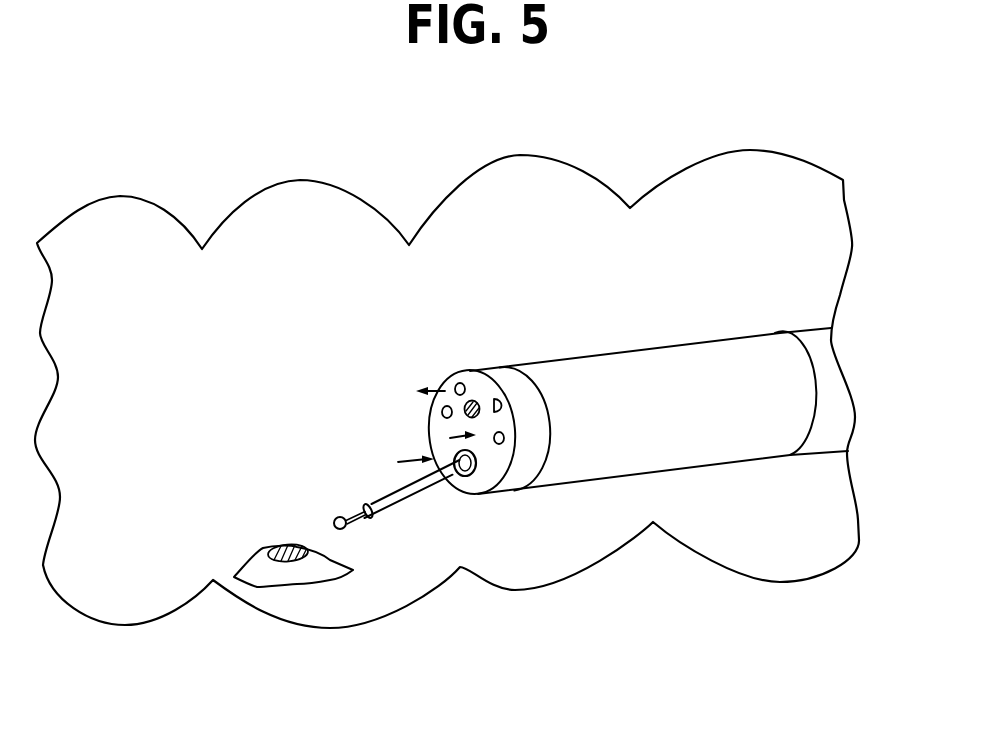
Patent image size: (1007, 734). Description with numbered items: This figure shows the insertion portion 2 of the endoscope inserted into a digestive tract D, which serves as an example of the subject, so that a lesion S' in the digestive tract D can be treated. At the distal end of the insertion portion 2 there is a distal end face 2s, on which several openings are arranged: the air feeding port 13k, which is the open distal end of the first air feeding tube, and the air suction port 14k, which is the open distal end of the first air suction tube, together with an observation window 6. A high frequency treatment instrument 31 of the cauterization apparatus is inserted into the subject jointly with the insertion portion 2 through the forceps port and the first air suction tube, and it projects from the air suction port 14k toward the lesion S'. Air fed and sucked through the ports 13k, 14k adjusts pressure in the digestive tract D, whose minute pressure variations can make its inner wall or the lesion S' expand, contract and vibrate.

The digestive tract D is at (558, 162).
The insertion portion 2 is at (623, 378).
The distal end face of insertion portion 2s is at (450, 438).
The observation window 6 is at (477, 401).
The air feeding port 13k is at (457, 383).
The air suction port 14k is at (503, 477).
The high frequency treatment instrument 31 is at (410, 502).
The lesion S' is at (281, 547).